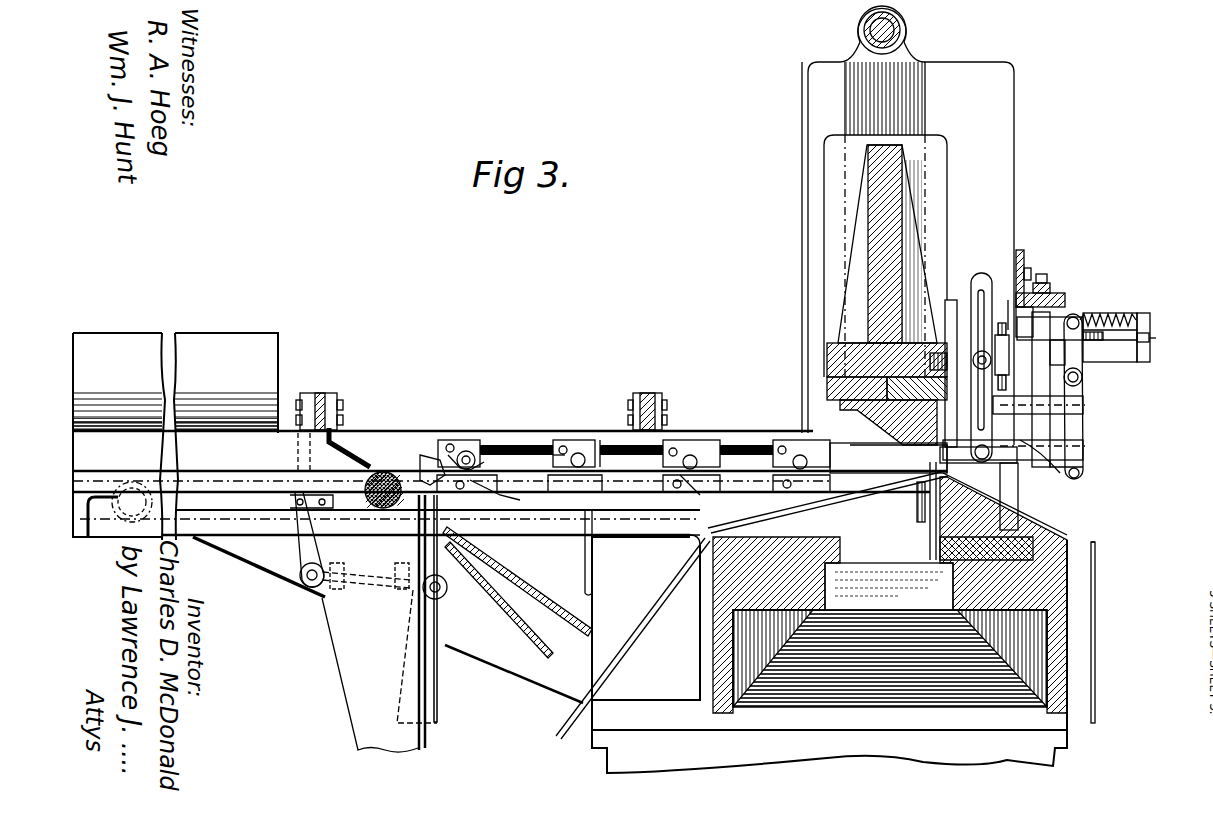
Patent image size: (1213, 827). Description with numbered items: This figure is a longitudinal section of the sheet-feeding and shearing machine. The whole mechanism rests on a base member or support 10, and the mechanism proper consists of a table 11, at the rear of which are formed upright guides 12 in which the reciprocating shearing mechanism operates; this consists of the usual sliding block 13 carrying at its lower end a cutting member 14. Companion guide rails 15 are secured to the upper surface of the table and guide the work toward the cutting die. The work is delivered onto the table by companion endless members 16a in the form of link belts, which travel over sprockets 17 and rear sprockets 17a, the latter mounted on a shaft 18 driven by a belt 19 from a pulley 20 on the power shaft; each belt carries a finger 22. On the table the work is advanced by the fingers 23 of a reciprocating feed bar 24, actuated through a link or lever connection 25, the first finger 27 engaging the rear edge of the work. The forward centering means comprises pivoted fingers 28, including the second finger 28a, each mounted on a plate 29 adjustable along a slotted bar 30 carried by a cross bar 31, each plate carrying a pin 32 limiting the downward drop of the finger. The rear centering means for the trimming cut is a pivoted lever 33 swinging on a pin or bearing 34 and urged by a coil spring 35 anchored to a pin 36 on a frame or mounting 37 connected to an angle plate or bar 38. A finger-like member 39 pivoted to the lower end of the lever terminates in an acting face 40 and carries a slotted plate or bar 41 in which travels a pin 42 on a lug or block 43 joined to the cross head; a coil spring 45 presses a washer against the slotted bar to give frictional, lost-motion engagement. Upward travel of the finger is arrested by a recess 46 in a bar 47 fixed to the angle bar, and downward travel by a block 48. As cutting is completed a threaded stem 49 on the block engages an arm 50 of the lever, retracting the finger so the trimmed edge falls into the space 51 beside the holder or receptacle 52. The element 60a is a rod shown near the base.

The base member or support 10 is at (1050, 760).
The table 11 is at (270, 540).
The upright guides 12 is at (1014, 105).
The sliding block 13 is at (352, 432).
The cutting member 14 is at (840, 402).
The guide rails 15 is at (883, 205).
The endless members 16a is at (230, 495).
The sprockets 17 is at (150, 512).
The rear sprockets 17a is at (389, 468).
The shaft 18 is at (366, 566).
The belt 19 is at (540, 645).
The pulley 20 is at (452, 438).
The finger 22 is at (510, 483).
The fingers 23 is at (470, 482).
The reciprocating feed bar 24 is at (530, 492).
The link or lever connection 25 is at (447, 673).
The first finger 27 is at (470, 450).
The pivoted fingers 28 is at (522, 448).
The second finger 28a is at (600, 438).
The plate 29 is at (575, 450).
The slotted bar 30 is at (565, 445).
The cross bar 31 is at (676, 370).
The pin 32 is at (440, 447).
The pivoted arm or lever 33 is at (1073, 405).
The pin or bearing 34 is at (1083, 377).
The coil spring 35 is at (1100, 325).
The pin 36 is at (1146, 318).
The frame or mounting 37 is at (1041, 330).
The angle plate or bar 38 is at (1024, 262).
The finger-like member 39 is at (1070, 478).
The acting face 40 is at (960, 470).
The slotted plate or bar 41 is at (975, 300).
The pin 42 is at (959, 373).
The lug or block 43 is at (968, 320).
The coil spring 45 is at (938, 352).
The recess 46 is at (1085, 446).
The bar 47 is at (1060, 320).
The block 48 is at (1020, 505).
The threaded stem 49 is at (1008, 300).
The arm 50 is at (1020, 412).
The space 51 is at (1093, 545).
The holder or receptacle 52 is at (1097, 635).
The rod 60a is at (855, 500).